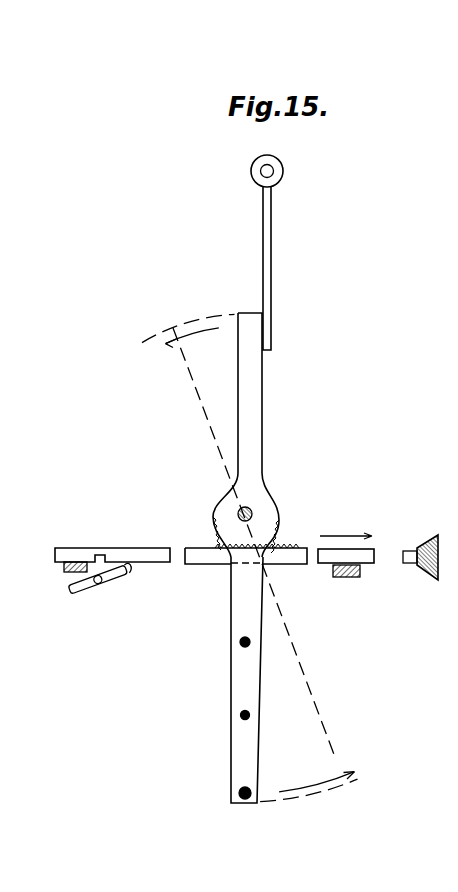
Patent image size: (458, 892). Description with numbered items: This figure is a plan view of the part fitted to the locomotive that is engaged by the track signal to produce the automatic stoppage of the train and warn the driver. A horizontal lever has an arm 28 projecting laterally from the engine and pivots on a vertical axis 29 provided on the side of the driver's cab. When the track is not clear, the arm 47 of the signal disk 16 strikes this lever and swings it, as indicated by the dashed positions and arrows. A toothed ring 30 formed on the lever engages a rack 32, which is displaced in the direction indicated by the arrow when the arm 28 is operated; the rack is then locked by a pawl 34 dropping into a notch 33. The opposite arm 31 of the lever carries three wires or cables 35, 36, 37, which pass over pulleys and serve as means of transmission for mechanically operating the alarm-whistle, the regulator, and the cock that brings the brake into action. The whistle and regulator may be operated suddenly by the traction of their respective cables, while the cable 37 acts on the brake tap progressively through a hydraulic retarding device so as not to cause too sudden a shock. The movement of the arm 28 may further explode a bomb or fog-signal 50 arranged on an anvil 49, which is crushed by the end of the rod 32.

The disk 16 is at (251, 171).
The arm of the disk 47 is at (263, 243).
The arm 28 is at (262, 410).
The vertical axis 29 is at (238, 514).
The toothed ring 30 is at (276, 533).
The arm of the lever 31 is at (257, 576).
The rack 32 is at (372, 552).
The notch 33 is at (100, 558).
The pawl 34 is at (100, 588).
The wire or cable 35 is at (245, 642).
The wire or cable 36 is at (245, 715).
The wire or cable 37 is at (245, 793).
The anvil 49 is at (428, 542).
The bomb or fog-signal 50 is at (410, 563).